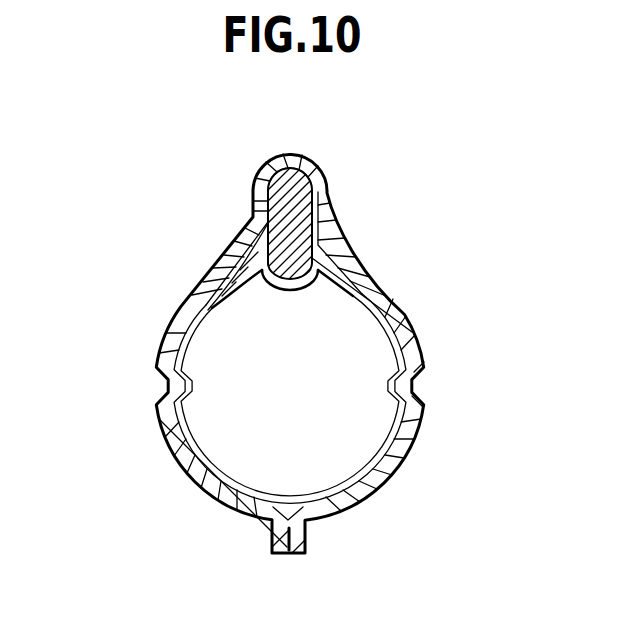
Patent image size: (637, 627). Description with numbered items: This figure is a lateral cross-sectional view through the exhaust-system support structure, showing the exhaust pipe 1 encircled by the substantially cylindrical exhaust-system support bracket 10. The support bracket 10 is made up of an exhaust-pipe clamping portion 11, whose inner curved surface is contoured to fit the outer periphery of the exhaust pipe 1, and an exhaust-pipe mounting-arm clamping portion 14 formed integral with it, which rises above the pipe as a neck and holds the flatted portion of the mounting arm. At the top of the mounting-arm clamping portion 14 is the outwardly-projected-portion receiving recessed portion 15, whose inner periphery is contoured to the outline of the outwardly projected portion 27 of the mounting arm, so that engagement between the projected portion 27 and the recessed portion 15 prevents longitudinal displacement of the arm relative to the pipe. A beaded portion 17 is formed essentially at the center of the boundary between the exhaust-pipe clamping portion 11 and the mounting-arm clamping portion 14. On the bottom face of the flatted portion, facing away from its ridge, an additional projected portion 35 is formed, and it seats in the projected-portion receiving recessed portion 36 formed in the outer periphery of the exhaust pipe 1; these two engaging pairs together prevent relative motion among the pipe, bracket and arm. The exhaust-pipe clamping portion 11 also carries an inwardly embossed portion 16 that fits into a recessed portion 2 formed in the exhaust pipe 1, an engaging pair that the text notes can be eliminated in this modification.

The exhaust pipe 1 is at (390, 473).
The recessed portion 2 is at (392, 379).
The exhaust-system support bracket 10 is at (180, 302).
The exhaust-pipe clamping portion 11 is at (180, 477).
The exhaust-pipe mounting-arm clamping portion 14 is at (250, 207).
The outwardly-projected-portion receiving recessed portion 15 is at (272, 160).
The inwardly embossed portion 16 is at (428, 385).
The beaded portion 17 is at (343, 243).
The outwardly projected portion 27 is at (292, 183).
The additional projected portion 35 is at (308, 257).
The projected-portion receiving recessed portion 36 is at (290, 296).